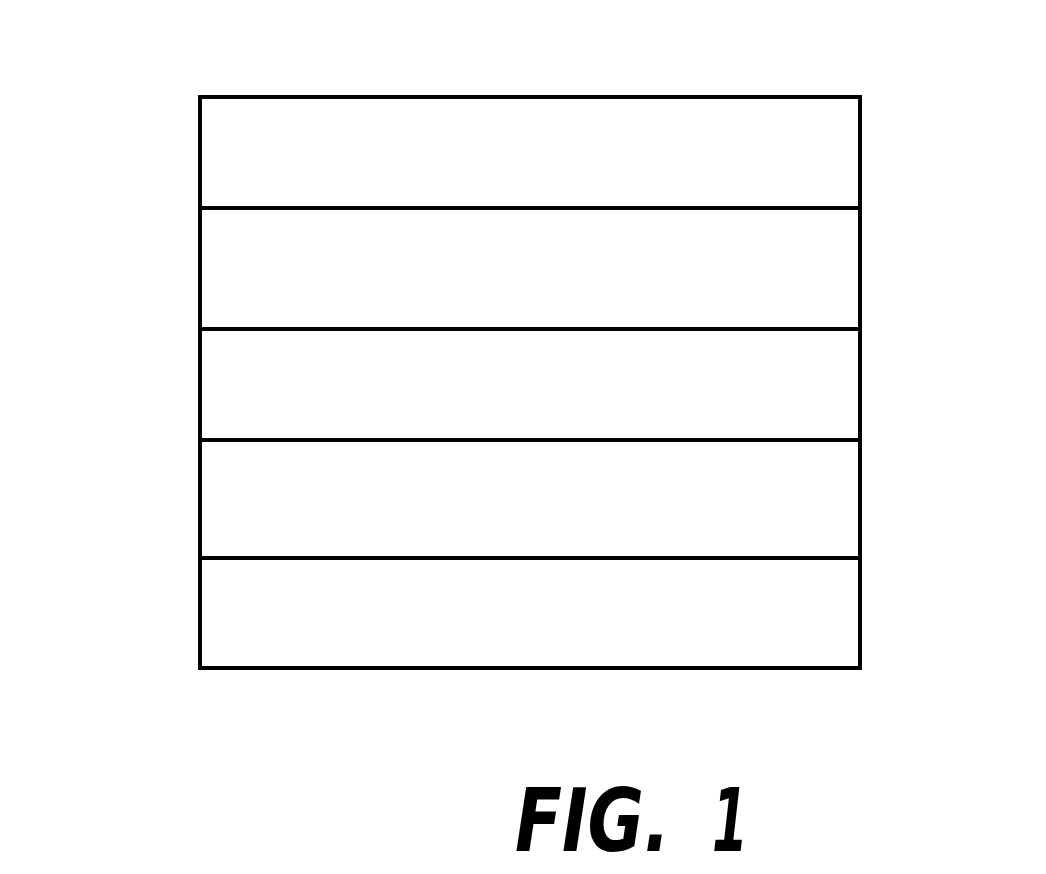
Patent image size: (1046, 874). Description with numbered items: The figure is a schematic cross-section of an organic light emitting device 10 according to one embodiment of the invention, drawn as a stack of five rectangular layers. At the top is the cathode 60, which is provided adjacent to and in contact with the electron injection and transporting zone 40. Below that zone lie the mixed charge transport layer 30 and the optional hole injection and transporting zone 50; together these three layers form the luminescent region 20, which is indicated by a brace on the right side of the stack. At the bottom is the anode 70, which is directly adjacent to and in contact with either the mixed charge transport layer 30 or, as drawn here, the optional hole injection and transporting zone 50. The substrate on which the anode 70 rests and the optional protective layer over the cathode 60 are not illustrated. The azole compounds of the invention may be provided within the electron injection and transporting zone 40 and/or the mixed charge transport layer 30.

The organic light emitting device 10 is at (185, 42).
The luminescent region 20 is at (521, 383).
The mixed charge transport layer 30 is at (200, 383).
The electron injection and transporting zone 40 is at (200, 267).
The hole injection and transporting zone 50 is at (200, 500).
The cathode 60 is at (200, 150).
The anode 70 is at (200, 613).